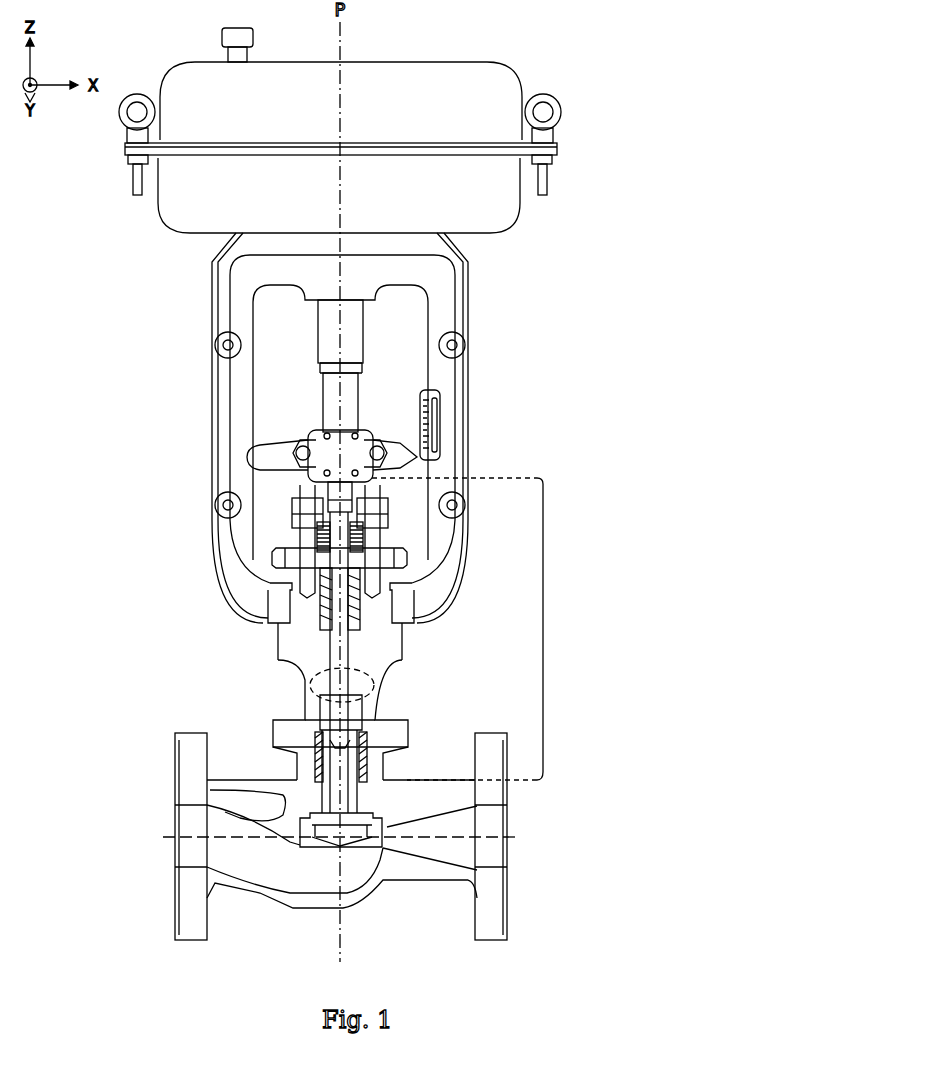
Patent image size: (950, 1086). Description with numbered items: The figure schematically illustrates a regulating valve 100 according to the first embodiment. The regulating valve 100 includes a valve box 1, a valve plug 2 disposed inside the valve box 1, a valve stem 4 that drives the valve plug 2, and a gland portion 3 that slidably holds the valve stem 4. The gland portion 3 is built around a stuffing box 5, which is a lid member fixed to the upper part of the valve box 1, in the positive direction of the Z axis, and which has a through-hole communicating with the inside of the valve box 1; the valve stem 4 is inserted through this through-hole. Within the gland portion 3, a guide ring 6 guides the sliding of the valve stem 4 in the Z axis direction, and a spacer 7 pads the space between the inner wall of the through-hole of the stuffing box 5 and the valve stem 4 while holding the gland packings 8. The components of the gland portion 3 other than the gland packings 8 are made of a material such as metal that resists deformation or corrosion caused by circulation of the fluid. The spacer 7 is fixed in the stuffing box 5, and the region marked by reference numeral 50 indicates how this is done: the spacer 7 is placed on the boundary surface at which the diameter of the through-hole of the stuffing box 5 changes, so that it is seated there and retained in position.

The regulating valve 100 is at (571, 41).
The valve box 1 is at (175, 740).
The valve plug 2 is at (374, 813).
The gland portion 3 is at (543, 628).
The valve stem 4 is at (338, 633).
The stuffing box 5 is at (281, 660).
The guide ring 6 is at (316, 737).
The spacer 7 is at (362, 653).
The gland packings 8 is at (296, 606).
The spacer fixing location 50 is at (377, 683).